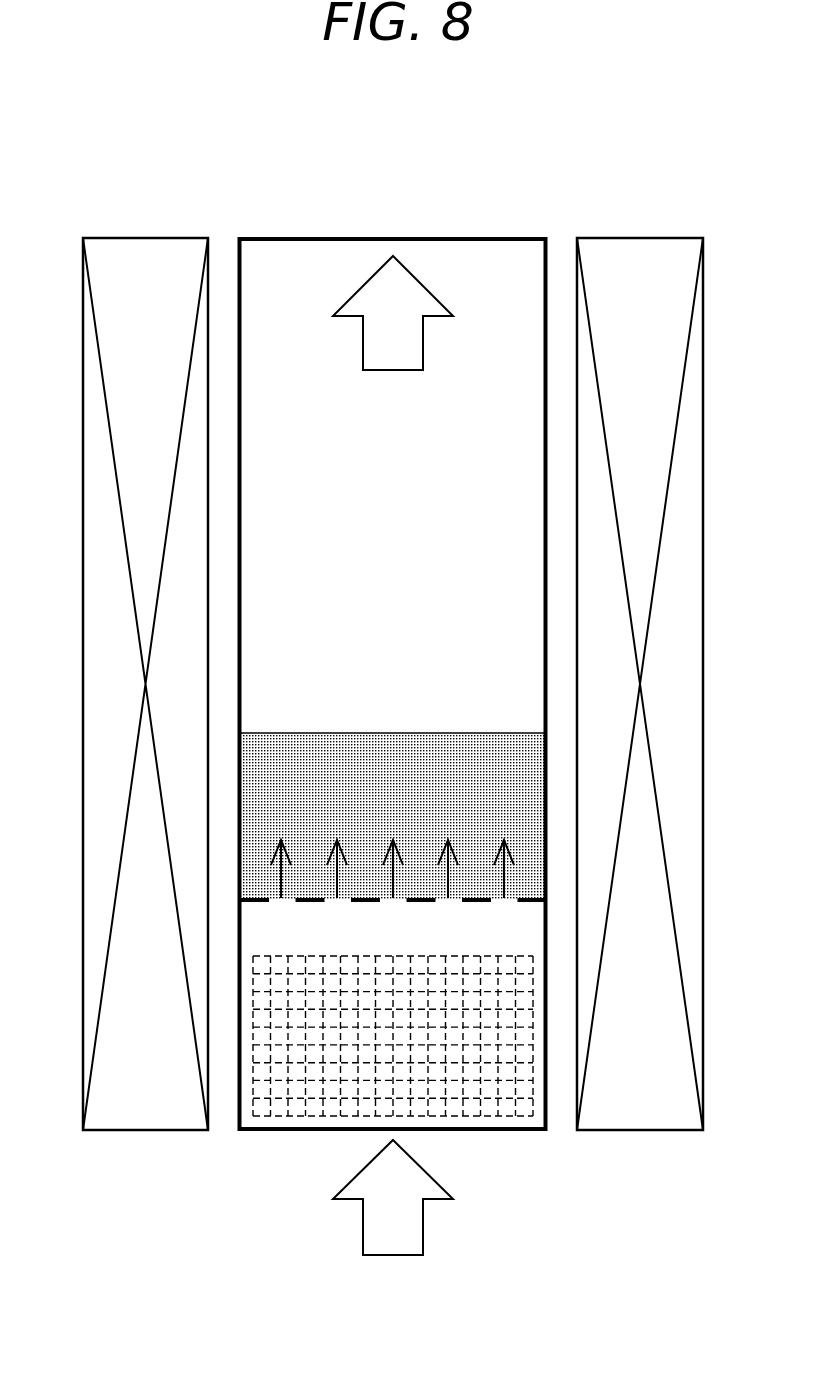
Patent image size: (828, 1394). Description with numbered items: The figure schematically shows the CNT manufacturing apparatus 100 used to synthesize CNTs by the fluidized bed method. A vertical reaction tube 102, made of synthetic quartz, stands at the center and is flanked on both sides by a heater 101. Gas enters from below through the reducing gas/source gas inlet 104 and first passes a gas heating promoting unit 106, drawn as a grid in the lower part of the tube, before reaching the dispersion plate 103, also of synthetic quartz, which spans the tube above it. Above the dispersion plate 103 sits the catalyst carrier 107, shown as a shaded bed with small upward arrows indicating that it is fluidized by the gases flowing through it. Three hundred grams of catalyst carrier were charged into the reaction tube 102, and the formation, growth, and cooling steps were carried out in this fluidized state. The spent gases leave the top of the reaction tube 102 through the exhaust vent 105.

The CNT manufacturing apparatus 100 is at (563, 152).
The heater 101 is at (129, 237).
The reaction tube 102 is at (238, 292).
The dispersion plate 103 is at (420, 903).
The reducing gas/source gas inlet 104 is at (479, 1131).
The exhaust vent 105 is at (448, 236).
The gas heating promoting unit 106 is at (364, 957).
The catalyst carrier 107 is at (390, 787).